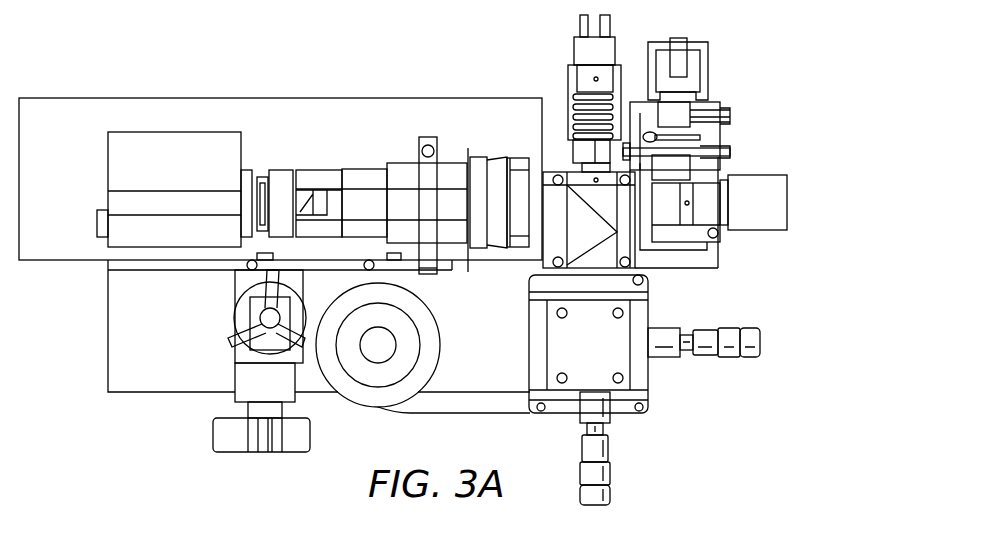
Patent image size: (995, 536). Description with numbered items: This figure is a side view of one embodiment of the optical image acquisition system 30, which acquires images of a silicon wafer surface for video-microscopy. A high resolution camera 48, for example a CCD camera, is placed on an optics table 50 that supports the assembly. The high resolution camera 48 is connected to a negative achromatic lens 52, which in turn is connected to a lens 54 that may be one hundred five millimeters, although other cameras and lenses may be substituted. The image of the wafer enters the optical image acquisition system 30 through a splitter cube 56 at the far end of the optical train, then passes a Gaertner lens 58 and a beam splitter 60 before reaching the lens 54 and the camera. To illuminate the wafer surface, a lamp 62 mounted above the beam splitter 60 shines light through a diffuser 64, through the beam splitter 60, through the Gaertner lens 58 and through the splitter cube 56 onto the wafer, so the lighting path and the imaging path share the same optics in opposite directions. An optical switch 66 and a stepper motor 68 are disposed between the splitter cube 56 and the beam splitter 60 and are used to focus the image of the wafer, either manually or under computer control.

The optical image acquisition system 30 is at (773, 48).
The high resolution camera 48 is at (108, 157).
The optics table 50 is at (108, 373).
The negative achromatic lens 52 is at (318, 186).
The lens 54 is at (510, 158).
The splitter cube 56 is at (790, 205).
The Gaertner lens 58 is at (725, 235).
The beam splitter 60 is at (556, 176).
The lamp 62 is at (573, 40).
The diffuser 64 is at (590, 166).
The optical switch 66 is at (712, 100).
The stepper motor 68 is at (687, 40).